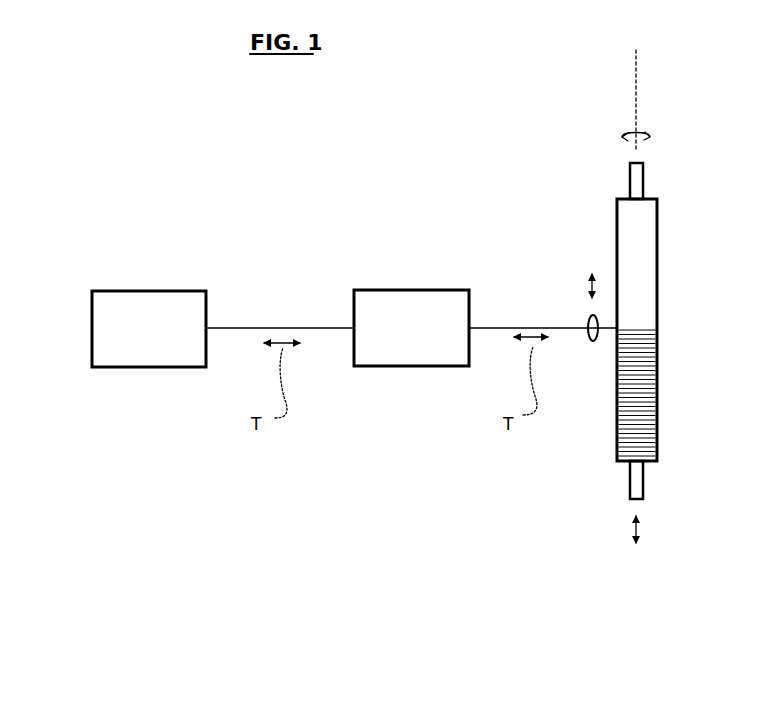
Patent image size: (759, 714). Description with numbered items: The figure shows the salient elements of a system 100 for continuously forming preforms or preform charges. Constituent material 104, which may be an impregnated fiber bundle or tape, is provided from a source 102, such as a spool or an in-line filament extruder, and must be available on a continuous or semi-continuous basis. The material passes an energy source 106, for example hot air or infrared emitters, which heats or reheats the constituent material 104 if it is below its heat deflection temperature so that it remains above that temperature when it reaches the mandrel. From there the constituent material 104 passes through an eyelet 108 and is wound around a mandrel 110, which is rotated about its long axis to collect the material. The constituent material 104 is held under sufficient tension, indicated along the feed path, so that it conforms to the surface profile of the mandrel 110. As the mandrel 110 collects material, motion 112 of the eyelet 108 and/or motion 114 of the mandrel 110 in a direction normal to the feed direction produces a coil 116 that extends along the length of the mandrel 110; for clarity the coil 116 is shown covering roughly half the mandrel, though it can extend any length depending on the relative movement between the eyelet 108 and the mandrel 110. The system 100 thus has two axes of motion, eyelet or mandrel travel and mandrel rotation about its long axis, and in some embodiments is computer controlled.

The system 100 is at (95, 160).
The source 102 is at (123, 291).
The constituent material 104 is at (278, 328).
The energy source 106 is at (405, 290).
The eyelet 108 is at (588, 318).
The mandrel 110 is at (658, 270).
The motion of eyelet 112 is at (588, 286).
The motion of mandrel 114 is at (632, 530).
The coil 116 is at (680, 385).